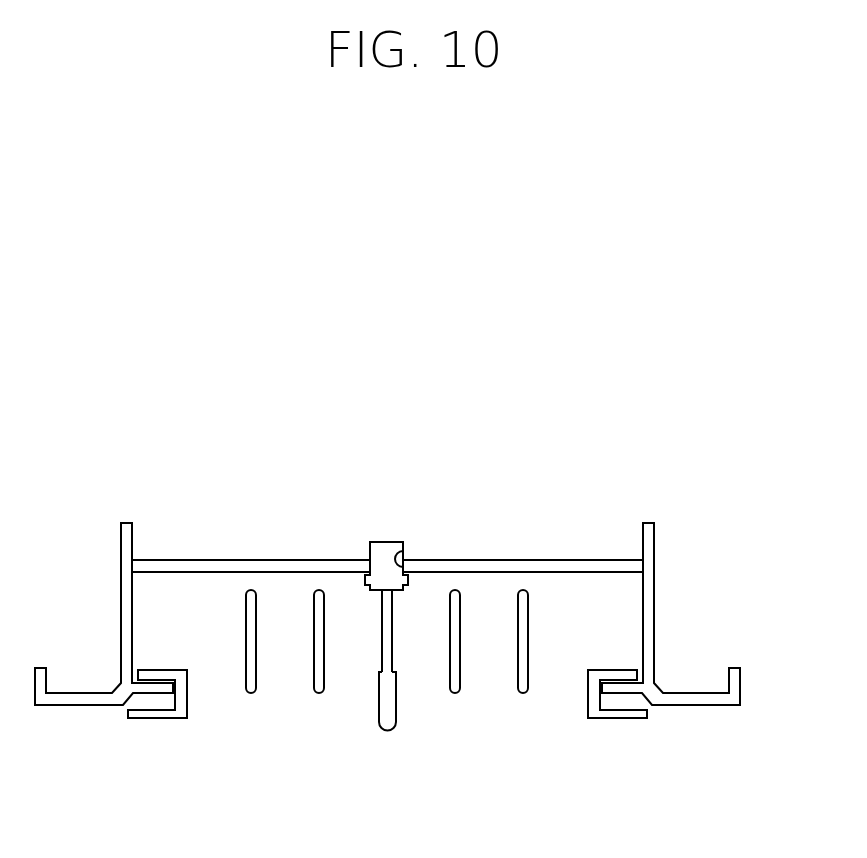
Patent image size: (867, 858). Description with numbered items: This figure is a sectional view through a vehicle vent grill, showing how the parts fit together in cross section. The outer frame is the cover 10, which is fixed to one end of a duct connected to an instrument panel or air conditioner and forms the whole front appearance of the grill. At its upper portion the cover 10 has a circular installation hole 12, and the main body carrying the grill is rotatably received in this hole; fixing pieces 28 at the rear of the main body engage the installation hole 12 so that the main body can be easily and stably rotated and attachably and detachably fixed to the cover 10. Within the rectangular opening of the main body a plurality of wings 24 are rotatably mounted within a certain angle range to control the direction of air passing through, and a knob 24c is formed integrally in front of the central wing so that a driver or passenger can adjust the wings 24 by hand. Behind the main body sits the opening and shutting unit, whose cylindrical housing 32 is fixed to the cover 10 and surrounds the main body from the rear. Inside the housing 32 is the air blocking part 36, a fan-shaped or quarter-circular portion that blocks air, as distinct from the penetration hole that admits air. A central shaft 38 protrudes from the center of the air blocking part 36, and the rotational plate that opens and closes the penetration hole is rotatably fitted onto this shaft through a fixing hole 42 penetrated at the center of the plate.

The cover 10 is at (742, 682).
The circular installation hole 12 is at (615, 690).
The wings 24 is at (387, 657).
The knob 24c is at (383, 728).
The fixing piece 28 is at (625, 670).
The cylindrical housing 32 is at (655, 573).
The air blocking part 36 is at (528, 562).
The central shaft 38 is at (382, 541).
The fixing hole 42 is at (404, 552).